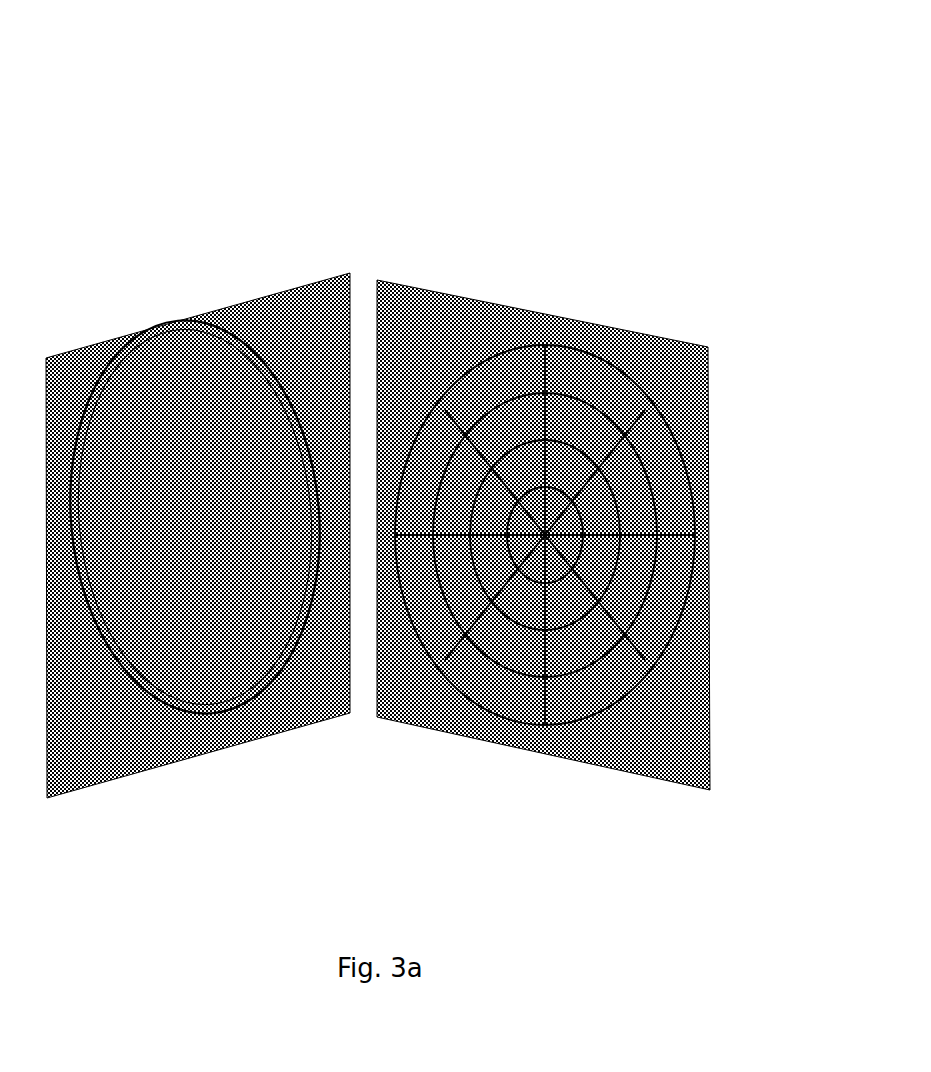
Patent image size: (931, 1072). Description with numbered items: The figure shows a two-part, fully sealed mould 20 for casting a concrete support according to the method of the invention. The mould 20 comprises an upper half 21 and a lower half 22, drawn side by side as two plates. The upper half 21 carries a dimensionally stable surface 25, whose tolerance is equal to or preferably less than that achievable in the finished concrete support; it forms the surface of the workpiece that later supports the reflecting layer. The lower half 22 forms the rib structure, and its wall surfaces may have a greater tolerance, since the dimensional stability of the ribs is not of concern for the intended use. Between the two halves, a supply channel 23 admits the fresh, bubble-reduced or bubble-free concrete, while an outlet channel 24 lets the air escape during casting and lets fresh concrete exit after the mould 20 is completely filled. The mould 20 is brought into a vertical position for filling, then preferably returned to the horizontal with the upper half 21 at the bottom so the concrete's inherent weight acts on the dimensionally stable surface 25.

The mould 20 is at (413, 426).
The upper half 21 is at (198, 483).
The lower half 22 is at (657, 322).
The supply channel 23 is at (542, 752).
The outlet channel 24 is at (540, 317).
The dimensionally stable surface 25 is at (178, 470).